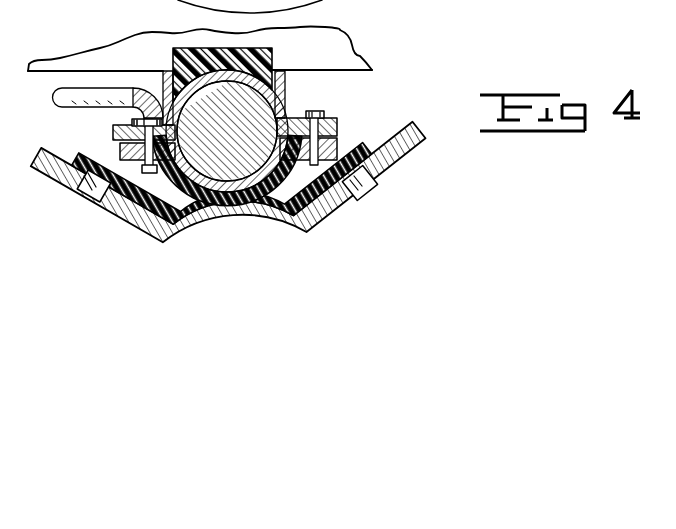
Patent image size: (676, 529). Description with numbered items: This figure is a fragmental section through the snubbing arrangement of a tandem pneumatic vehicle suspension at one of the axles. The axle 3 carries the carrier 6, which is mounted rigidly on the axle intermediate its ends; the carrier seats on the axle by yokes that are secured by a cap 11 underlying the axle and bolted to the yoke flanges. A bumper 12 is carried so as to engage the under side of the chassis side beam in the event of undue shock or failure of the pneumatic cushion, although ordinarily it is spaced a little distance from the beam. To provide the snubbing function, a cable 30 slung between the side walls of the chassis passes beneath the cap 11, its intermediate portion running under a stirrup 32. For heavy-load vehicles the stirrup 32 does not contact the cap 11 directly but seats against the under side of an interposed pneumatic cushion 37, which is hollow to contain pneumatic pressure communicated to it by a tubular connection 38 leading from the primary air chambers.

The axle 3 is at (286, 93).
The carrier member 6 is at (352, 55).
The cap 11 is at (337, 137).
The bumper 12 is at (274, 50).
The cable 30 is at (396, 156).
The stirrup 32 is at (375, 145).
The pneumatic cushion 37 is at (287, 192).
The tubular connection 38 is at (57, 99).